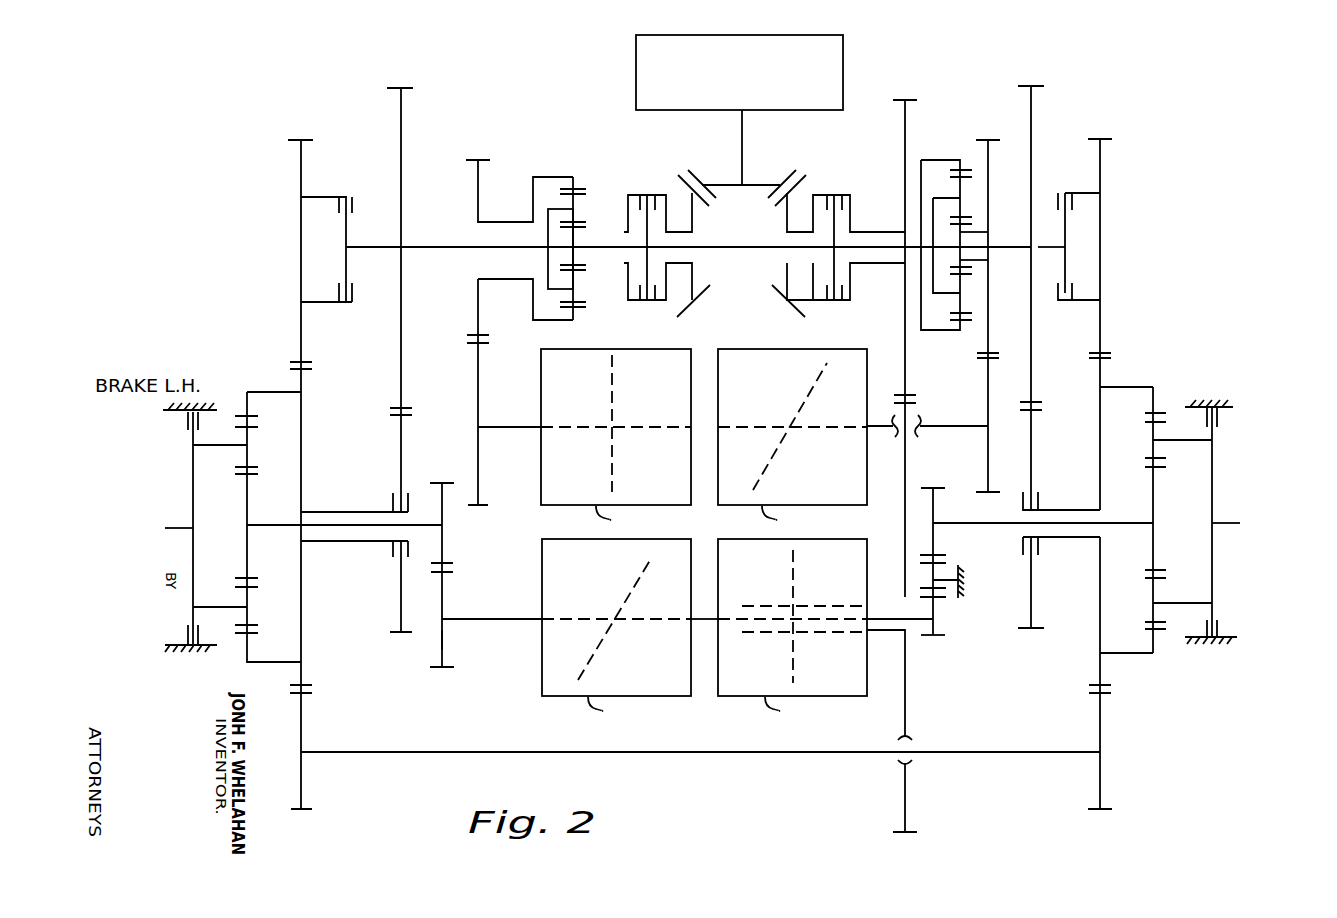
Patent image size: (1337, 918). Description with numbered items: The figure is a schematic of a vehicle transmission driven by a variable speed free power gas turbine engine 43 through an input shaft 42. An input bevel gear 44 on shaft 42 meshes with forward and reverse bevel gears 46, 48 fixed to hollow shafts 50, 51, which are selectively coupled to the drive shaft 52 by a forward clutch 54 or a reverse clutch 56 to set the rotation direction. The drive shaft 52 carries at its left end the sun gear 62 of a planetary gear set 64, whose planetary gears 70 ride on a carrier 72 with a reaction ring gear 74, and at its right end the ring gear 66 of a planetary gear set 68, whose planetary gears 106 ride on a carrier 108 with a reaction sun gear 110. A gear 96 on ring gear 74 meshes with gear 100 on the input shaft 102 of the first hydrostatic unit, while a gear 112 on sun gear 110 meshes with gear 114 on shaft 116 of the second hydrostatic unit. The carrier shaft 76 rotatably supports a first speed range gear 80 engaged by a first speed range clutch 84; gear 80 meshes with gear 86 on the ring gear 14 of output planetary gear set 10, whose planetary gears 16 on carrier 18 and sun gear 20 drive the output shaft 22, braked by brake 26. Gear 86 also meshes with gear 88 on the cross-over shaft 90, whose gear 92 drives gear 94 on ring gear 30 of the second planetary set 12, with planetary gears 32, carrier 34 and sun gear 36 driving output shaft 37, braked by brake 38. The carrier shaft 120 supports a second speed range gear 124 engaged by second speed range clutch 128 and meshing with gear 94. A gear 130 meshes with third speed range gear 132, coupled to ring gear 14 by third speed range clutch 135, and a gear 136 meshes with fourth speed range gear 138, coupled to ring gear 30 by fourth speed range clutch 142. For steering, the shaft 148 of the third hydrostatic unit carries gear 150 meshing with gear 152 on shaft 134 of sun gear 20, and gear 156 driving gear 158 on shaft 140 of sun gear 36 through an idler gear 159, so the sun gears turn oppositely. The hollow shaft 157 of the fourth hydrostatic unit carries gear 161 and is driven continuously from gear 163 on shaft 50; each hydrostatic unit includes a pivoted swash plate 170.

The output planetary gear set 10 is at (266, 380).
The second planetary gear set 12 is at (1151, 379).
The ring gear 14 is at (274, 662).
The planetary gears 16 is at (247, 603).
The carrier 18 is at (194, 516).
The sun gear 20 is at (248, 510).
The output shaft 22 is at (172, 527).
The brake 26 is at (182, 425).
The ring gear 30 is at (1159, 653).
The planetary gears 32 is at (1154, 603).
The carrier 34 is at (1212, 572).
The sun gear 36 is at (1153, 492).
The output shaft 37 is at (1222, 523).
The brake 38 is at (1217, 420).
The input shaft 42 is at (742, 139).
The free power gas turbine engine 43 is at (636, 70).
The input bevel gear 44 is at (783, 172).
The forward bevel gear 46 is at (773, 215).
The reverse bevel gear 48 is at (703, 215).
The hollow rotatable shaft 50 is at (798, 230).
The hollow rotatable shaft 51 is at (685, 230).
The drive shaft 52 is at (730, 250).
The forward clutch 54 is at (836, 302).
The reverse clutch 56 is at (640, 302).
The sun gear 62 is at (578, 248).
The planetary gear set 64 is at (570, 174).
The ring gear 66 is at (948, 160).
The planetary gear set 68 is at (935, 154).
The planetary gears 70 is at (576, 284).
The carrier 72 is at (548, 262).
The ring gear 74 is at (576, 308).
The carrier shaft 76 is at (350, 249).
The first speed range gear 80 is at (301, 250).
The first speed range clutch 84 is at (349, 196).
The gear 86 is at (301, 625).
The gear 88 is at (301, 779).
The cross-over shaft 90 is at (782, 752).
The gear 92 is at (1100, 764).
The gear 94 is at (1098, 598).
The gear 96 is at (478, 190).
The gear 100 is at (478, 386).
The input shaft 102 is at (480, 430).
The planetary gears 106 is at (974, 196).
The carrier 108 is at (933, 265).
The sun gear 110 is at (960, 265).
The gear 112 is at (990, 352).
The gear 114 is at (990, 395).
The shaft 116 is at (882, 427).
The carrier shaft 120 is at (1047, 249).
The second speed range gear 124 is at (1100, 247).
The second speed range clutch 128 is at (1061, 193).
The gear 130 is at (401, 120).
The third speed range gear 132 is at (401, 598).
The shaft 134 is at (302, 526).
The third speed range clutch 135 is at (393, 495).
The gear 136 is at (1030, 116).
The fourth speed range gear 138 is at (1031, 605).
The shaft 140 is at (954, 525).
The fourth speed range clutch 142 is at (1038, 500).
The shaft 148 is at (472, 620).
The gear 150 is at (443, 636).
The gear 152 is at (443, 557).
The gear 156 is at (933, 626).
The hollow shaft 157 is at (905, 619).
The gear 158 is at (933, 506).
The idler gear 159 is at (933, 570).
The gear 161 is at (905, 718).
The gear 163 is at (905, 133).
The swash plate 170 is at (612, 380).